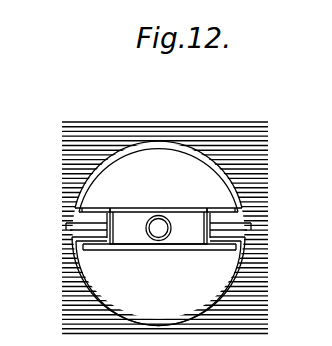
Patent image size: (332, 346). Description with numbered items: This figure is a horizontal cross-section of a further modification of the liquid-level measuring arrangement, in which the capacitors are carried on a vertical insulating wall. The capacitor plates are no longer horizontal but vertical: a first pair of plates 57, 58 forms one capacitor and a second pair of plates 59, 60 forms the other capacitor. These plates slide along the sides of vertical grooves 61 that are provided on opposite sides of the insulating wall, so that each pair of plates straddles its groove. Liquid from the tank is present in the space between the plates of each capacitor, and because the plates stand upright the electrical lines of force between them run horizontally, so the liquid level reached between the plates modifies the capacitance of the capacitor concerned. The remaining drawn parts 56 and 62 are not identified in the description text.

The cylindrical shell 56 is at (135, 147).
The capacitor plate 57 is at (96, 207).
The capacitor plate 59 is at (212, 207).
The capacitor plate 58 is at (91, 245).
The capacitor plate 60 is at (221, 249).
The vertical groove 61 is at (83, 224).
The right interlocking connector 62 is at (232, 233).